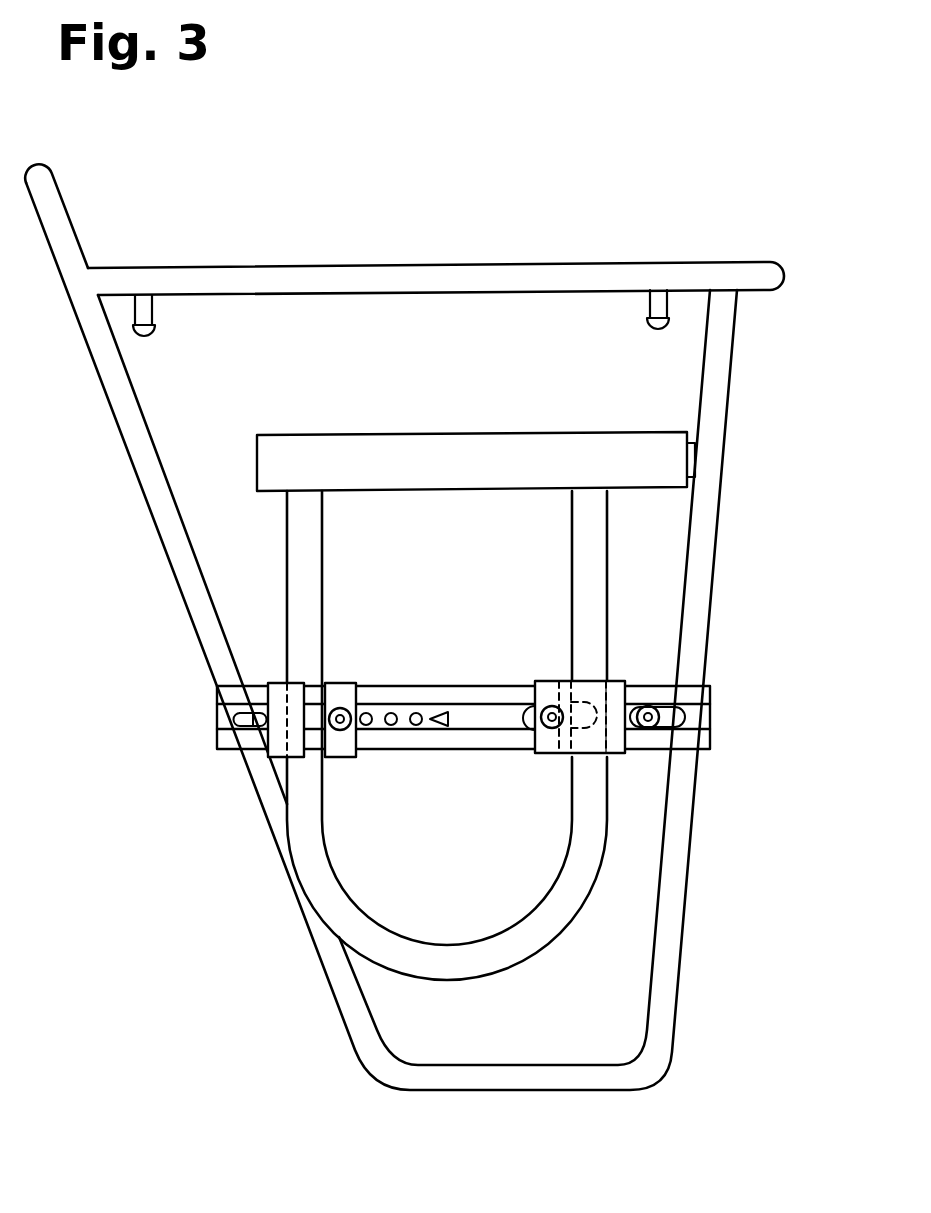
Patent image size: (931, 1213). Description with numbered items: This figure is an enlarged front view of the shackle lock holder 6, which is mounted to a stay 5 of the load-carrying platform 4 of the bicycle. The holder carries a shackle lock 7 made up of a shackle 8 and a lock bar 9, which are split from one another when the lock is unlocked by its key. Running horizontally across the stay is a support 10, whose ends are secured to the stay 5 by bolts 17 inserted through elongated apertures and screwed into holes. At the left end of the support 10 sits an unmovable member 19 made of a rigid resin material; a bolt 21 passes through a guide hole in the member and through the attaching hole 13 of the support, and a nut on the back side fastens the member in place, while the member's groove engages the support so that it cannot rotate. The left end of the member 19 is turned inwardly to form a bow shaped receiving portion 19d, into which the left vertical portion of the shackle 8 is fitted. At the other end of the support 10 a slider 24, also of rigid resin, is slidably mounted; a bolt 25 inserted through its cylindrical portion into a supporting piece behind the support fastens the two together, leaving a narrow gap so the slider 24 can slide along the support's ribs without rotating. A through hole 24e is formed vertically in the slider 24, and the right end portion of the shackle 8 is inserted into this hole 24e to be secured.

The load-carrying platform 4 is at (485, 265).
The stay 5 is at (713, 557).
The shackle lock holder 6 is at (448, 666).
The shackle lock 7 is at (433, 433).
The shackle 8 is at (323, 540).
The lock bar 9 is at (501, 447).
The support 10 is at (711, 691).
The attaching hole 13 is at (416, 726).
The bolts 17 is at (646, 729).
The unmovable member 19 is at (341, 683).
The bow shaped receiving portion 19d is at (287, 683).
The bolt 21 is at (340, 731).
The slider 24 is at (538, 681).
The through hole 24e is at (600, 681).
The bolt 25 is at (549, 729).